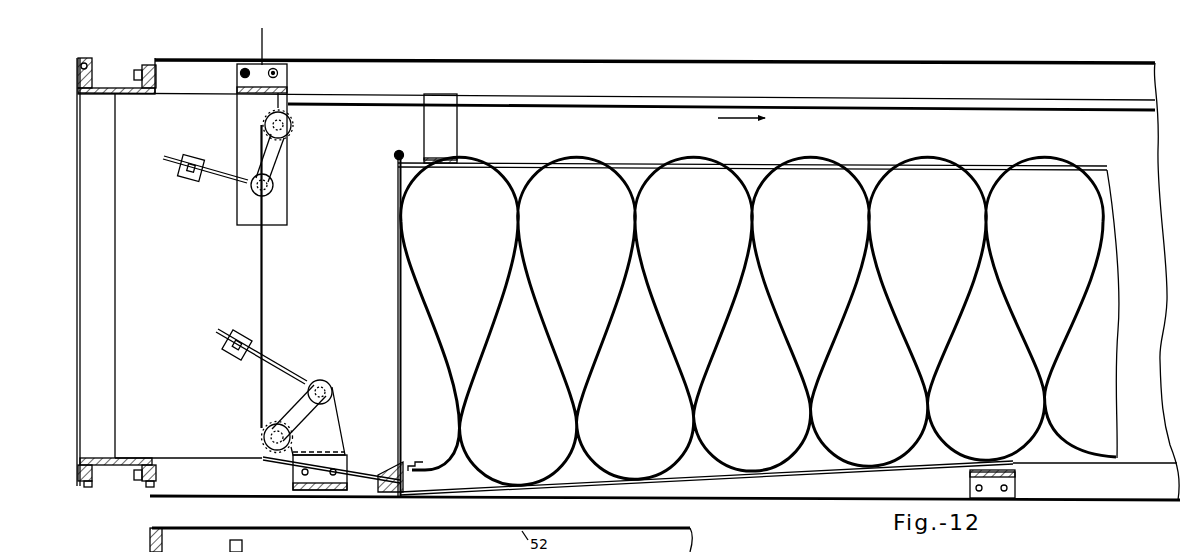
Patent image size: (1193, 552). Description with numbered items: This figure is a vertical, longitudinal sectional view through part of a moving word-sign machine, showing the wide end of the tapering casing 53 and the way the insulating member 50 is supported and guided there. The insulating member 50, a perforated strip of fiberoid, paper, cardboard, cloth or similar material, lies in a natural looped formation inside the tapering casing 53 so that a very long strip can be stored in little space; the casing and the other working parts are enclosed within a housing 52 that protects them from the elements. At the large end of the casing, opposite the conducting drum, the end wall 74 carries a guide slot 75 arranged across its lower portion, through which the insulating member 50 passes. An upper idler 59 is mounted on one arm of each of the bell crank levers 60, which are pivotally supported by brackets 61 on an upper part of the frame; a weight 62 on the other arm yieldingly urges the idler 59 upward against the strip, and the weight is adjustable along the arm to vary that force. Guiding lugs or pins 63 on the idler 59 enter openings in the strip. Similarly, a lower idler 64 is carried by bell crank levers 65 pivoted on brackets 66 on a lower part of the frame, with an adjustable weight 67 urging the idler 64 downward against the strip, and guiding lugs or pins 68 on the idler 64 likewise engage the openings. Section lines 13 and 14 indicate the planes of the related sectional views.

The section line 13- 13 is at (250, 35).
The section line 14- 14 is at (356, 461).
The insulating member 50 is at (843, 295).
The housing 52 is at (80, 405).
The tapering casing 53 is at (998, 165).
The upper idler 59 is at (291, 134).
The bell crank levers 60 is at (278, 173).
The brackets 61 is at (250, 132).
The weight 62 is at (193, 180).
The guiding lugs or pins 63 is at (294, 128).
The lower idler 64 is at (262, 438).
The bell crank levers 65 is at (294, 372).
The brackets 66 is at (330, 416).
The weight 67 is at (237, 356).
The guiding lugs or pins 68 is at (278, 420).
The end wall 74 is at (397, 295).
The guide slot 75 is at (405, 493).